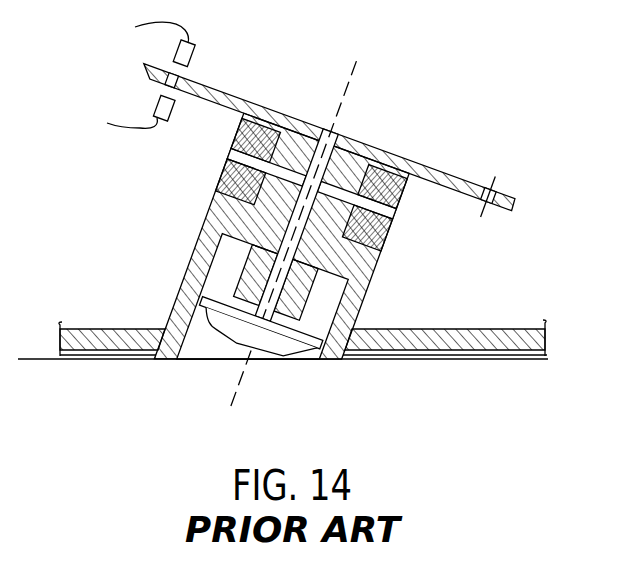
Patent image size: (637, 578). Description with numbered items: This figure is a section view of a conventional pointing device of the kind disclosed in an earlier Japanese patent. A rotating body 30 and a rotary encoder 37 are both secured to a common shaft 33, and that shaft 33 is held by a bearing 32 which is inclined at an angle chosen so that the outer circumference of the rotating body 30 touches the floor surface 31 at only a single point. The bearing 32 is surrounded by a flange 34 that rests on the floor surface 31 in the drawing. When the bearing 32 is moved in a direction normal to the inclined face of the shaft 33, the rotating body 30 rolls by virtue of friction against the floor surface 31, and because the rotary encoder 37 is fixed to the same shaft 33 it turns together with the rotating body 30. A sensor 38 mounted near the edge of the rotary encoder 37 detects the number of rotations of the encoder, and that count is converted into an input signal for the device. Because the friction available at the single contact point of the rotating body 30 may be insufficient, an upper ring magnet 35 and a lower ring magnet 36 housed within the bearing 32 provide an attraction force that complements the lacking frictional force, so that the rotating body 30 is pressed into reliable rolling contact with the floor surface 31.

The rotating body 30 is at (237, 338).
The floor surface 31 is at (423, 359).
The bearing 32 is at (368, 280).
The shaft 33 is at (331, 132).
The flange 34 is at (488, 329).
The upper ring magnet 35 is at (230, 143).
The lower ring magnet 36 is at (219, 178).
The rotary encoder 37 is at (437, 168).
The sensor 38 is at (152, 100).